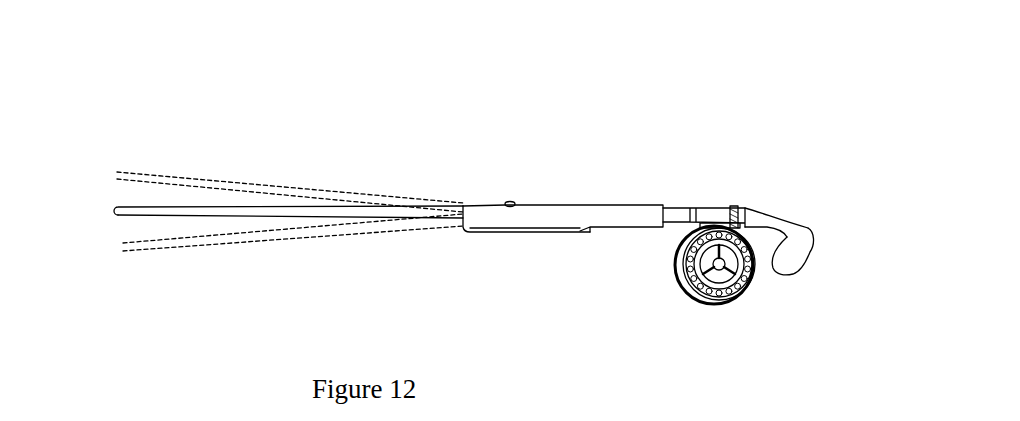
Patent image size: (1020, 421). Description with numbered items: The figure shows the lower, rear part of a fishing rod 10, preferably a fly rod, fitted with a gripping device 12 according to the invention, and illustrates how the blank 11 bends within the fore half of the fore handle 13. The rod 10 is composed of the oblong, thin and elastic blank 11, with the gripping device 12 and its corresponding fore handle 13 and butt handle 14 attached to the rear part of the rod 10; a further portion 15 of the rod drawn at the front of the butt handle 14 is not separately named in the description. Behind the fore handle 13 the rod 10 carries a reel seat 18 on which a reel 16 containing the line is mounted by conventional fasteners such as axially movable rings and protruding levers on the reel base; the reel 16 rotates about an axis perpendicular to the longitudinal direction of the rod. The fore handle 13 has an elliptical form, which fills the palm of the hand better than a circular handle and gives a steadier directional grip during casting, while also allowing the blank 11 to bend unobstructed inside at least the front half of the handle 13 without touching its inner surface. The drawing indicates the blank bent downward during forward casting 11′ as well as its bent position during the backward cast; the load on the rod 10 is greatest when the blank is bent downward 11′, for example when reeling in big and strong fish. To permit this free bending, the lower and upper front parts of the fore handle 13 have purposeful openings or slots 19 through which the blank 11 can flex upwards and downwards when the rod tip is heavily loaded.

The fishing rod 10 is at (180, 208).
The blank 11 is at (335, 215).
The blank bent during forward casting 11′ is at (288, 235).
The gripping device 12 is at (613, 203).
The fore handle 13 is at (522, 207).
The butt handle 14 is at (787, 265).
The butt grip 15 is at (778, 218).
The reel 16 is at (682, 290).
The reel seat 18 is at (718, 220).
The openings or slots 19 is at (472, 203).